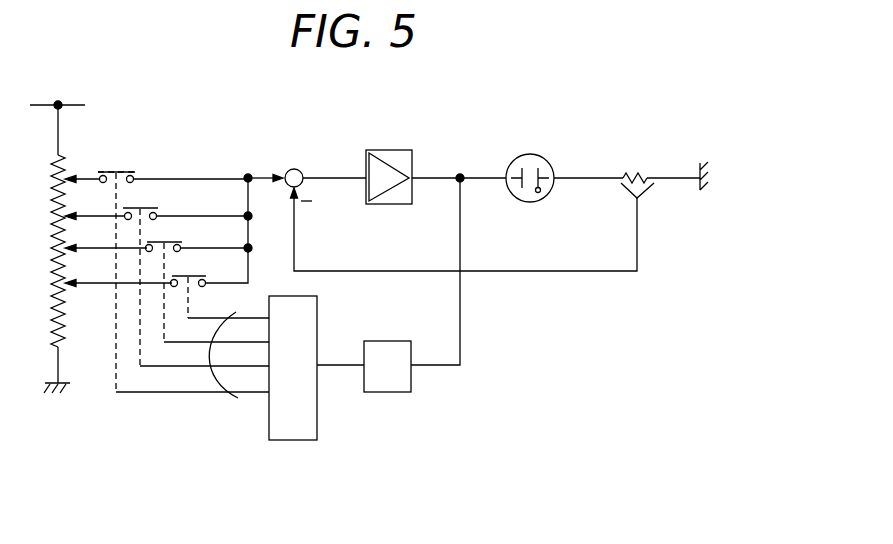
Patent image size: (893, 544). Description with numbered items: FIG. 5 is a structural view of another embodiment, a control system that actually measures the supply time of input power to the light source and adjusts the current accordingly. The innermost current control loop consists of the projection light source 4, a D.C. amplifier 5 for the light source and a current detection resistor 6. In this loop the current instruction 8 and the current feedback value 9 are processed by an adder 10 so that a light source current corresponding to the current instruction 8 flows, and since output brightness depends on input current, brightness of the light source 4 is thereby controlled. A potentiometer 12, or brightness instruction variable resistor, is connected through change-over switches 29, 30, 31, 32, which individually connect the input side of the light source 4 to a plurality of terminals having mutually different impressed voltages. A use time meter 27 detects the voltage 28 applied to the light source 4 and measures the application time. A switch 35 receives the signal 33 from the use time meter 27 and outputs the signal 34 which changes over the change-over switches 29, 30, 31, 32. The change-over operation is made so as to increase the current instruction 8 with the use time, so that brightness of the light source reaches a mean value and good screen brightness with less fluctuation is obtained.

The projection light source 4 is at (537, 136).
The D.C. amplifier 5 is at (392, 150).
The current detection resistor 6 is at (648, 157).
The current instruction 8 is at (252, 175).
The current feedback value 9 is at (296, 240).
The adder 10 is at (295, 168).
The potentiometer 12 is at (52, 243).
The use time meter 27 is at (393, 395).
The voltage applied to the light source 28 is at (440, 173).
The change-over switch 29 is at (111, 168).
The change-over switch 30 is at (135, 205).
The change-over switch 31 is at (161, 240).
The change-over switch 32 is at (186, 274).
The signal from the use time meter 33 is at (344, 372).
The signal 34 is at (225, 403).
The switch 35 is at (308, 442).